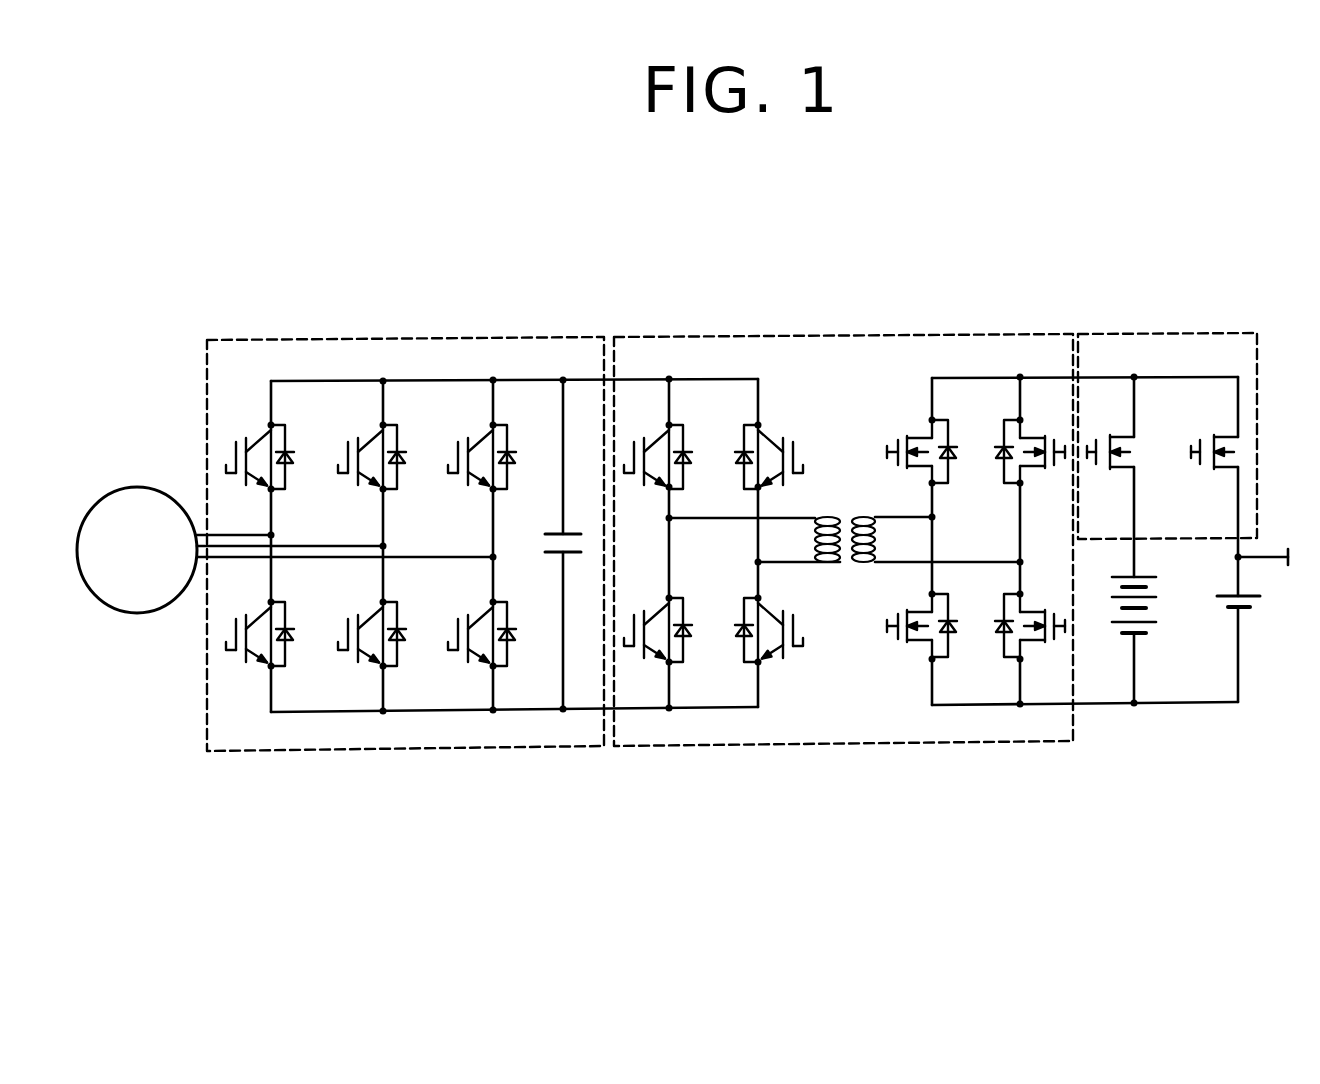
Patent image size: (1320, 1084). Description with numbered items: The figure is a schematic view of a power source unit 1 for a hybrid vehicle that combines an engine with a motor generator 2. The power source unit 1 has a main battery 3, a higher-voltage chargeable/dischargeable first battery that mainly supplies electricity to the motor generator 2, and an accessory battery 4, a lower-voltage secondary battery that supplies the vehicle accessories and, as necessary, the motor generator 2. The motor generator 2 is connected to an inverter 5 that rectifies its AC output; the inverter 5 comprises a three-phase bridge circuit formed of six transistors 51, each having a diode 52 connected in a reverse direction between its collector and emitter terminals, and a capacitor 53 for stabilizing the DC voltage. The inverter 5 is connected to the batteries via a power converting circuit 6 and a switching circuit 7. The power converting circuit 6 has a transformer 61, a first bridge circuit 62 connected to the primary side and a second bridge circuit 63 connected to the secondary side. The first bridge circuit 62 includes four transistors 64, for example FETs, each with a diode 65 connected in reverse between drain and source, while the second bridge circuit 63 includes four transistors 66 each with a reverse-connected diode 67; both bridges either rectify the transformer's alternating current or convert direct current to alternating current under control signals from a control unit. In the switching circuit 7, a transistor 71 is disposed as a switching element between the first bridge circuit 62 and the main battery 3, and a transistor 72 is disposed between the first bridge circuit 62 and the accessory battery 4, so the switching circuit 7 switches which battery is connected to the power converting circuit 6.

The power source unit 1 is at (1121, 236).
The motor generator 2 is at (134, 487).
The main battery 3 is at (1155, 608).
The accessory battery 4 is at (1258, 610).
The inverter 5 is at (540, 338).
The power converting circuit 6 is at (840, 335).
The switching circuit 7 is at (1213, 333).
The transistor 51 is at (247, 486).
The diode 52 is at (285, 430).
The capacitor 53 is at (549, 553).
The transformer 61 is at (858, 514).
The first bridge circuit 62 is at (976, 378).
The second bridge circuit 63 is at (719, 379).
The transistor 64 is at (896, 436).
The diode 65 is at (951, 437).
The transistor 66 is at (636, 440).
The diode 67 is at (690, 437).
The transistor 71 is at (1100, 437).
The transistor 72 is at (1203, 437).